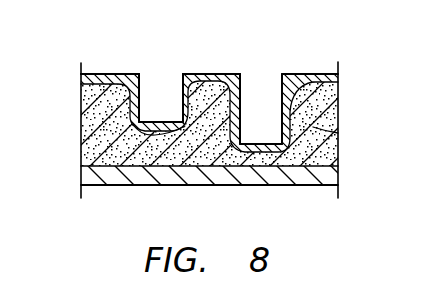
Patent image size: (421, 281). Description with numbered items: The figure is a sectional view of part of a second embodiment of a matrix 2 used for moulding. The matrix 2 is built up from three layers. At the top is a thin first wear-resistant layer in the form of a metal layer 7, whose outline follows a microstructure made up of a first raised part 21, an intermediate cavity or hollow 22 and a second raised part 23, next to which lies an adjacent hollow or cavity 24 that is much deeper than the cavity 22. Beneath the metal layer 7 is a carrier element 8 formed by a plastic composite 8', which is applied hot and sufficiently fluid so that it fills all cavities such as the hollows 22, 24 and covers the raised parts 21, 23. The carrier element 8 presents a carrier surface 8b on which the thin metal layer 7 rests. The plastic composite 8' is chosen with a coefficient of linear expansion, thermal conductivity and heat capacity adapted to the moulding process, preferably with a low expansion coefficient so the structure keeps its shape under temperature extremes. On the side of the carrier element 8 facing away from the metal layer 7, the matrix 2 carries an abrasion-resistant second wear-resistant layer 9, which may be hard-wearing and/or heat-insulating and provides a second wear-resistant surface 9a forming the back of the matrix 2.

The matrix 2 is at (212, 123).
The metal layer 7 is at (326, 74).
The carrier element 8 is at (225, 114).
The plastic composite 8' is at (343, 131).
The carrier surface 8b is at (287, 74).
The second wear-resistant layer 9 is at (137, 186).
The second wear-resistant surface 9a is at (297, 187).
The first raised part 21 is at (99, 73).
The intermediate cavity or hollow 22 is at (159, 72).
The second raised part 23 is at (202, 73).
The adjacent hollow or cavity 24 is at (250, 73).